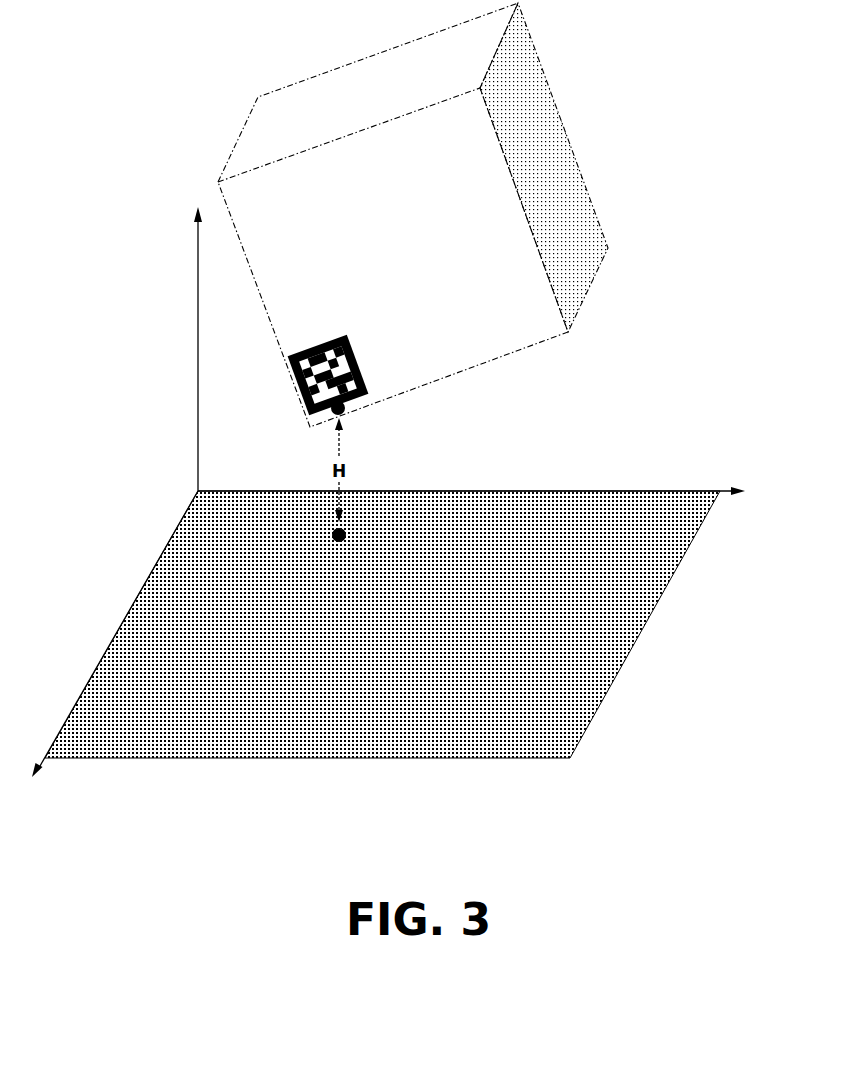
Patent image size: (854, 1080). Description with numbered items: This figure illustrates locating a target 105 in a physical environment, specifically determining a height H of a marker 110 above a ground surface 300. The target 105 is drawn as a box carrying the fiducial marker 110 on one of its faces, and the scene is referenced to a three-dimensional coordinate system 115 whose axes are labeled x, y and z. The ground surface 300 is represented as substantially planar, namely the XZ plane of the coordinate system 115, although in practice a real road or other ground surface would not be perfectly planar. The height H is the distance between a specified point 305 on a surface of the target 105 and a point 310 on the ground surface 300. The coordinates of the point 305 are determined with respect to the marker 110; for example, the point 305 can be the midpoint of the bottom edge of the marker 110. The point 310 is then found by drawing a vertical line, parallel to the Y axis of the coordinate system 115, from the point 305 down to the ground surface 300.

The target 105 is at (563, 127).
The marker 110 is at (347, 338).
The three-dimensional coordinate system 115 is at (198, 398).
The ground surface 300 is at (615, 607).
The specified point 305 is at (346, 407).
The point on the ground surface 310 is at (337, 531).